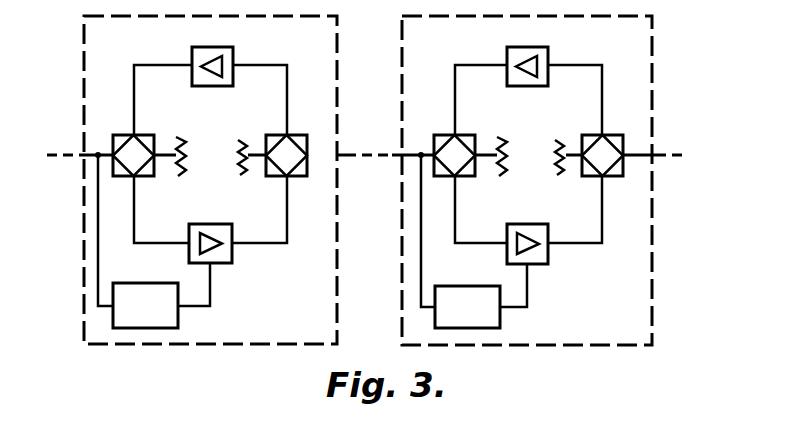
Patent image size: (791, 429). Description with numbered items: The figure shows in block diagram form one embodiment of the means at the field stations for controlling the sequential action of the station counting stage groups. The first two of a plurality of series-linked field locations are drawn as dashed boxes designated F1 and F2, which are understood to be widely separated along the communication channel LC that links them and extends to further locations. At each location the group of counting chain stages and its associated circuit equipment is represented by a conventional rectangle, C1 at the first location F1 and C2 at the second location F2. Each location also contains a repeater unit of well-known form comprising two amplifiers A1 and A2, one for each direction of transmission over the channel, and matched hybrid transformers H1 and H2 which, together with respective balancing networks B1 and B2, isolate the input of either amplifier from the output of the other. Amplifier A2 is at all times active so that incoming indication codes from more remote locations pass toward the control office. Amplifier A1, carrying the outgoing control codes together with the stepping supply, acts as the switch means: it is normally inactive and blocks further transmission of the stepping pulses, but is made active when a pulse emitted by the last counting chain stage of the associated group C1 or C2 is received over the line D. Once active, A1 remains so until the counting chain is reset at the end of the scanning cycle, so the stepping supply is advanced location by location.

The amplifier A1 is at (368, 231).
The amplifier A2 is at (370, 55).
The balancing network B1 is at (357, 154).
The balancing network B2 is at (384, 163).
The group of counting chain stages C1 is at (145, 305).
The group of counting chain stages C2 is at (467, 307).
The line D is at (352, 285).
The first field location F1 is at (210, 180).
The second field location F2 is at (527, 180).
The hybrid transformer H1 is at (303, 171).
The hybrid transformer H2 is at (454, 172).
The line conductor LC is at (371, 143).